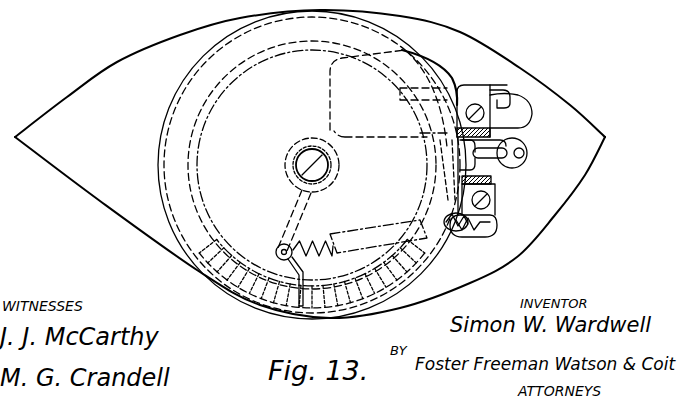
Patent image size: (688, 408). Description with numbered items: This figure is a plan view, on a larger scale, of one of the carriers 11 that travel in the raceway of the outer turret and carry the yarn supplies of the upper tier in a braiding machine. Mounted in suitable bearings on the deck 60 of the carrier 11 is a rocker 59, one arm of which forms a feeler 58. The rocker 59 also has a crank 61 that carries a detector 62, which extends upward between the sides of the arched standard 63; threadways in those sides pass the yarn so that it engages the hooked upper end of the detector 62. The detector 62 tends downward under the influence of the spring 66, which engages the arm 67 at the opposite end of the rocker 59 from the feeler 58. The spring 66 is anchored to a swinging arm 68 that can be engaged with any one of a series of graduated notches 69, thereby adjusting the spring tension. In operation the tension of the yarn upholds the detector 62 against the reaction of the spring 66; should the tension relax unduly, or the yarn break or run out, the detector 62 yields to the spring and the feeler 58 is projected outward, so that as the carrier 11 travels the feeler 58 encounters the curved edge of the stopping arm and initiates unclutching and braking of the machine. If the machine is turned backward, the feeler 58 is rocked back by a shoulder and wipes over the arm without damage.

The carrier 11 is at (605, 140).
The feeler 58 is at (517, 93).
The rocker 59 is at (463, 93).
The deck 60 is at (513, 72).
The crank 61 is at (495, 140).
The detector 62 is at (526, 155).
The arched standard 63 is at (492, 130).
The spring 66 is at (392, 235).
The arm 67 is at (492, 220).
The swinging arm 68 is at (286, 219).
The graduated notches 69 is at (238, 272).